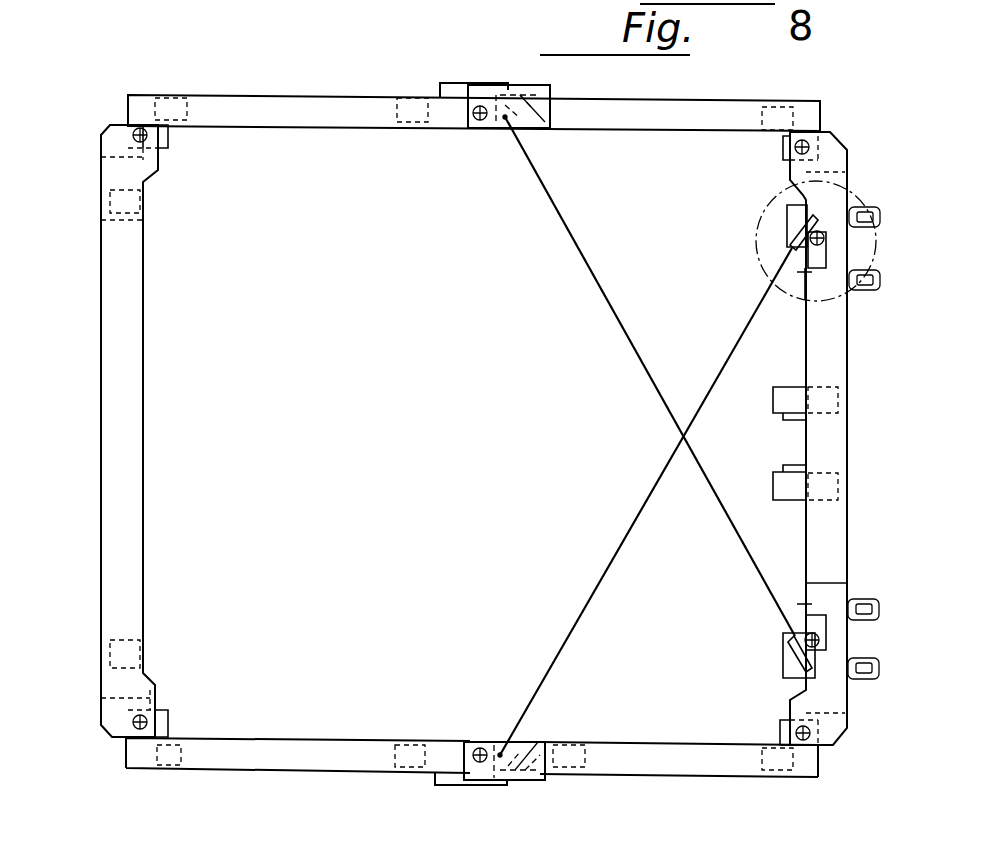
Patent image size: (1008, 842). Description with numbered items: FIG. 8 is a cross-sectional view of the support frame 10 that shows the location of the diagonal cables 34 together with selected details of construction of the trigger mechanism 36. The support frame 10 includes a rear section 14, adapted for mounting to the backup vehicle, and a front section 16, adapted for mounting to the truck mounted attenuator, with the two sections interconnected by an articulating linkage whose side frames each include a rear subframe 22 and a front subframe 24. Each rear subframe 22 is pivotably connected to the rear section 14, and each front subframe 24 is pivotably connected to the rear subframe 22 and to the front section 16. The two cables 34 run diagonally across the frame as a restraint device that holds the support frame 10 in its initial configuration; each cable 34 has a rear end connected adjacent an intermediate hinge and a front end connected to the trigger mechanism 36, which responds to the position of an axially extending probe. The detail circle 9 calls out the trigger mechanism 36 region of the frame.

The latch detail circle 9 is at (850, 200).
The support frame 10 is at (226, 784).
The rear section 14 is at (118, 546).
The front section 16 is at (838, 535).
The rear subframe 22 is at (303, 760).
The front subframe 24 is at (640, 763).
The diagonal cables 34 is at (735, 540).
The trigger mechanism 36 is at (782, 310).